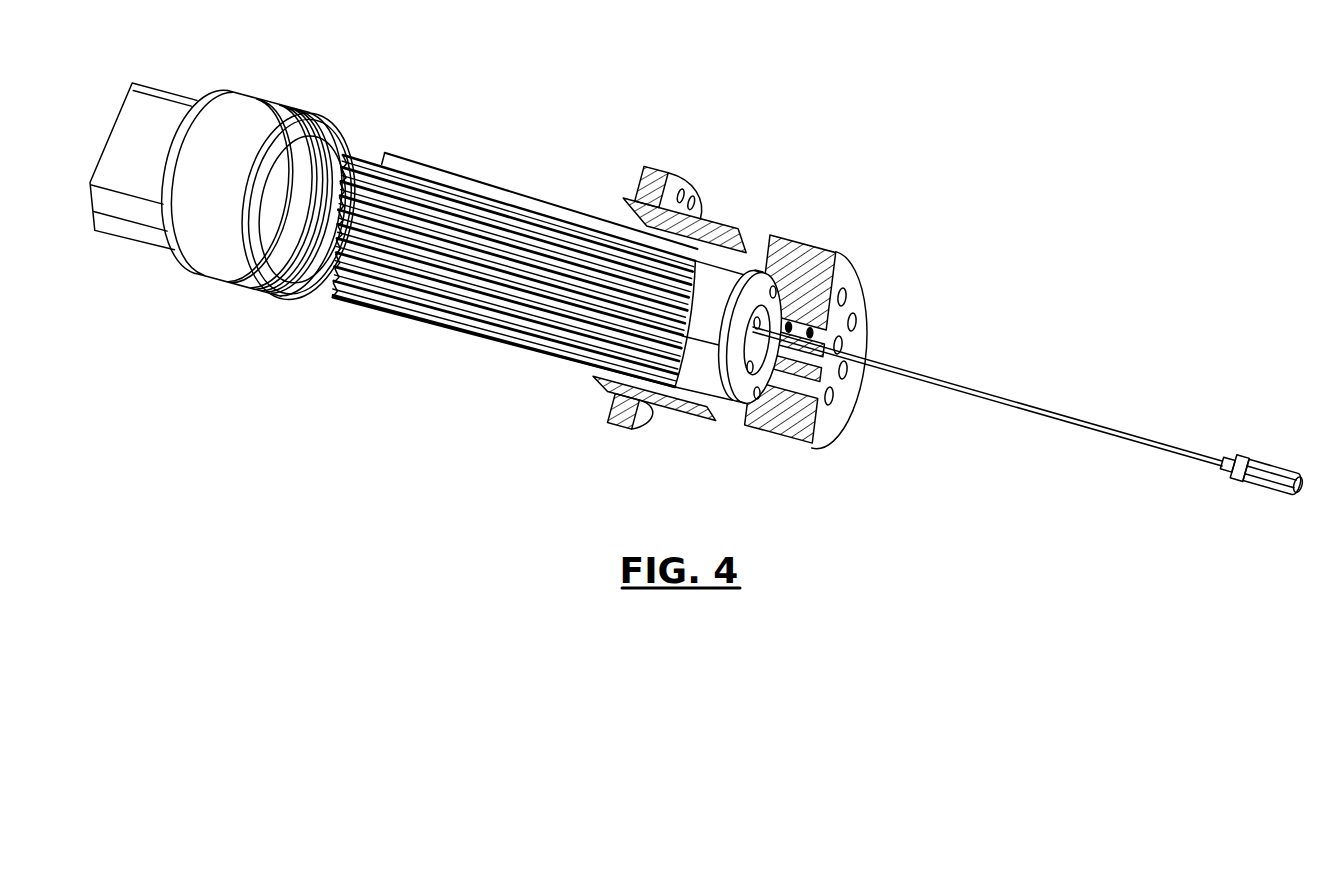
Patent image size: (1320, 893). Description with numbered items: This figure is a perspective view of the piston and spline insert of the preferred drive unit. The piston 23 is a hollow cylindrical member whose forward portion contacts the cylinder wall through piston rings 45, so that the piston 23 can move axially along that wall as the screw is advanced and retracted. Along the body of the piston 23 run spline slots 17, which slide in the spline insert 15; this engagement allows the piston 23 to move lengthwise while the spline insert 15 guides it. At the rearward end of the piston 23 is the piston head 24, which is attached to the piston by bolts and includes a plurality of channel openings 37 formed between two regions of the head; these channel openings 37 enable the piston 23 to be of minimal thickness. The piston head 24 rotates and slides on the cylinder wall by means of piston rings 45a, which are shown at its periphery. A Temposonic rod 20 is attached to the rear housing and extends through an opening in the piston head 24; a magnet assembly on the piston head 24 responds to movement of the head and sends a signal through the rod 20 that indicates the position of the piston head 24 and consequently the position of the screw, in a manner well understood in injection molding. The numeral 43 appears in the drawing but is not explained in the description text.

The piston rings 45 is at (313, 112).
The piston 23 is at (313, 277).
The spline slots 17 is at (488, 307).
The spline insert 15 is at (703, 225).
The piston rings 45a is at (815, 248).
The piston head 24 is at (858, 270).
The apertures 43 is at (855, 318).
The channel openings 37 is at (870, 355).
The Temposonic rod 20 is at (1010, 395).